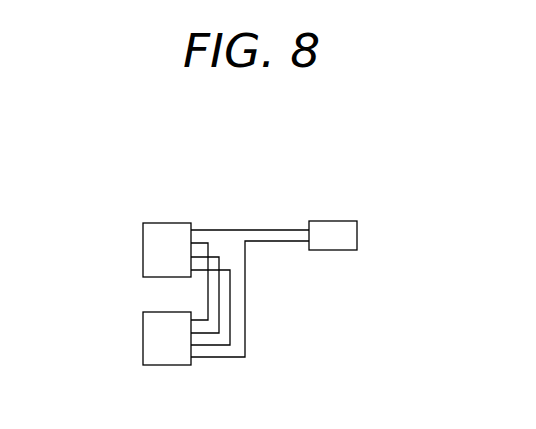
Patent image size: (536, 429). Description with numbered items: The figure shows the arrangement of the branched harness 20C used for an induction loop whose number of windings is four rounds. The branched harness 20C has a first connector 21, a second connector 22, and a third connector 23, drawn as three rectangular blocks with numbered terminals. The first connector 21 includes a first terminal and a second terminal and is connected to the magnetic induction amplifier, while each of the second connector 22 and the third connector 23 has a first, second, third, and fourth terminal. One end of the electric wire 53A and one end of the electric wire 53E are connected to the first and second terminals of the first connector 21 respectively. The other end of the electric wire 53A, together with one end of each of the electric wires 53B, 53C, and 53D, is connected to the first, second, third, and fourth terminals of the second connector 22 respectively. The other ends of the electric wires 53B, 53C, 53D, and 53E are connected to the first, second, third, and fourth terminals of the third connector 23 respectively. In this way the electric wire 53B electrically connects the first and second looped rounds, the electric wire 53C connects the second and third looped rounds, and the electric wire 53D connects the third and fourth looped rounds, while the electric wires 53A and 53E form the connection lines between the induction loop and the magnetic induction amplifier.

The branched harness 20C is at (268, 148).
The first connector 21 is at (357, 235).
The second connector 22 is at (143, 245).
The third connector 23 is at (143, 334).
The electric wire 53A is at (268, 229).
The electric wire 53B is at (245, 280).
The electric wire 53C is at (230, 297).
The electric wire 53D is at (230, 318).
The electric wire 53E is at (245, 338).